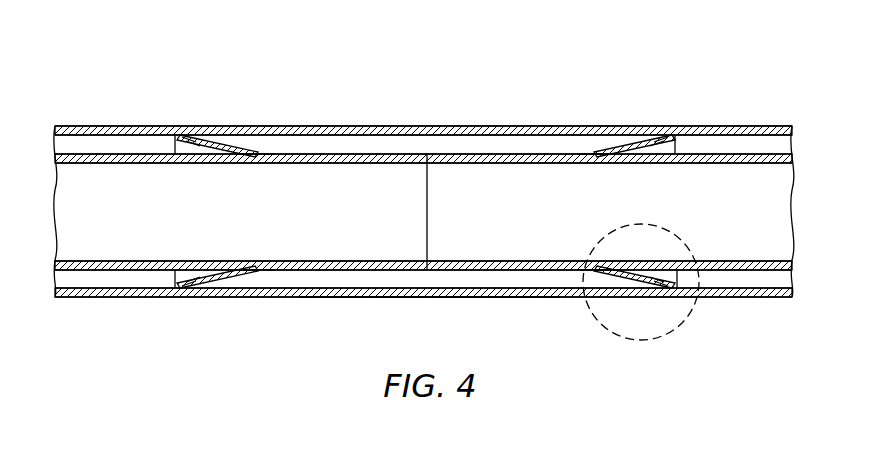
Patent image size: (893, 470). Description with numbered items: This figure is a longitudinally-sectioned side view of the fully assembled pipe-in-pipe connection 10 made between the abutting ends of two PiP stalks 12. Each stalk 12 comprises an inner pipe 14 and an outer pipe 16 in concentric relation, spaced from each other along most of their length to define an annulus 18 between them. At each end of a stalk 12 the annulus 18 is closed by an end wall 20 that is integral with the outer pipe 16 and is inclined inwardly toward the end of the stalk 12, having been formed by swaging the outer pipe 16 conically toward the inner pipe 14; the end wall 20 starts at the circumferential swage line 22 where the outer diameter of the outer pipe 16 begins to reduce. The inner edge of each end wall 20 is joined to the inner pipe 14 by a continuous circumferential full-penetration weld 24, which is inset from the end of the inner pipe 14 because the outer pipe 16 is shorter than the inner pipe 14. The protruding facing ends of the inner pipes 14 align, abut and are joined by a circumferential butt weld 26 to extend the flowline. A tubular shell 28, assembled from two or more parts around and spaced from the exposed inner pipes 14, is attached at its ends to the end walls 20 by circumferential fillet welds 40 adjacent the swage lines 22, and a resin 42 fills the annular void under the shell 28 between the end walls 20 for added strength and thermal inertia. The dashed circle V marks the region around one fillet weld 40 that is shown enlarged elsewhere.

The connection 10 is at (390, 66).
The PiP stalk 12 is at (134, 65).
The inner pipe 14 is at (494, 128).
The outer pipe 16 is at (725, 145).
The annulus 18 is at (89, 130).
The end wall 20 is at (233, 128).
The swage line 22 is at (178, 128).
The full-penetration weld 24 is at (266, 128).
The butt weld 26 is at (429, 212).
The tubular shell 28 is at (476, 296).
The fillet weld 40 is at (196, 128).
The resin 42 is at (425, 140).
The detail view circle V is at (665, 224).